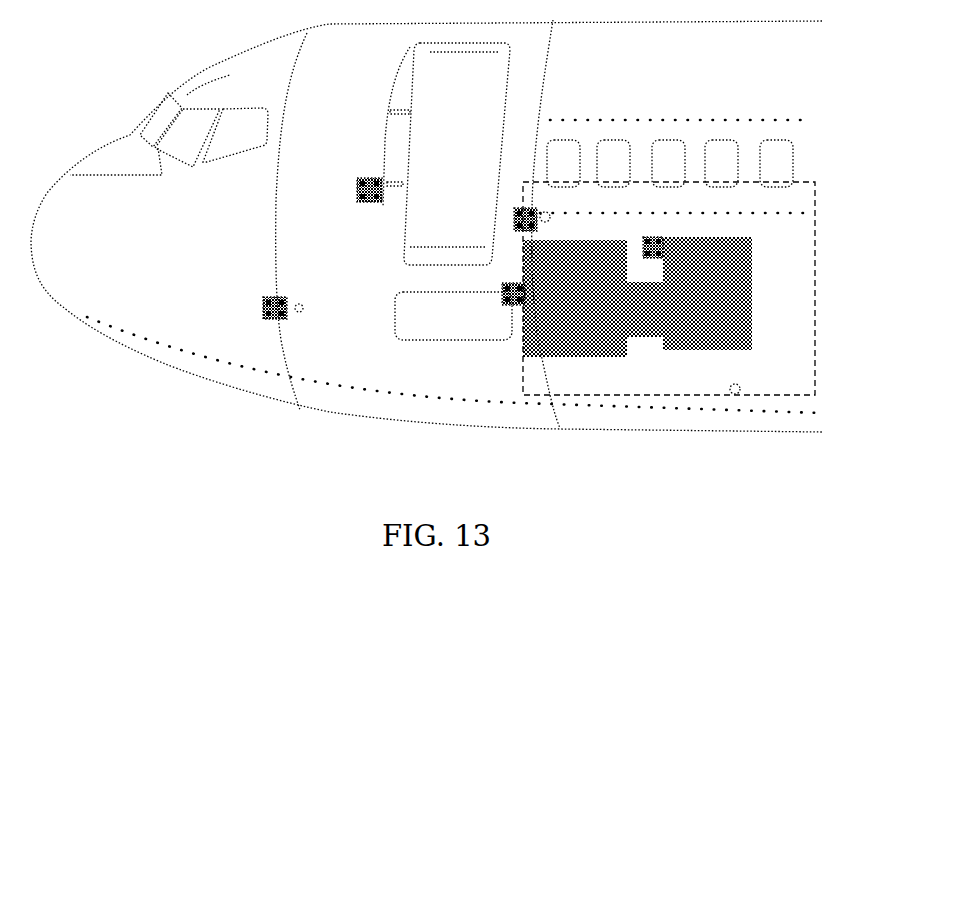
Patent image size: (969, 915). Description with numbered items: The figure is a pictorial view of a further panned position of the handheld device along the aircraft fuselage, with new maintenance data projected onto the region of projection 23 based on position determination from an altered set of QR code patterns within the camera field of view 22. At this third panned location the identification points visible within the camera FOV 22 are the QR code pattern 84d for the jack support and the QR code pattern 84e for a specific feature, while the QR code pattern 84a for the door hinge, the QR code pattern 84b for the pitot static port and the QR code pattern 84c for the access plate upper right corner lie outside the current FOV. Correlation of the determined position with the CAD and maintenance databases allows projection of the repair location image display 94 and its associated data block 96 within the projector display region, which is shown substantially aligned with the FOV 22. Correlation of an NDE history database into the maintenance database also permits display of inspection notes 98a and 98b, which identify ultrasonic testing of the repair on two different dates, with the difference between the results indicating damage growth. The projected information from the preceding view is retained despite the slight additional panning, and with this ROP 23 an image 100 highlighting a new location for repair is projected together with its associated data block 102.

The camera field of view 22 is at (699, 163).
The region of projection 23 is at (743, 182).
The QR code pattern 84a is at (363, 178).
The QR code pattern 84b is at (273, 320).
The QR code pattern 84c is at (500, 300).
The QR code pattern 84d is at (533, 212).
The QR code pattern 84e is at (660, 238).
The repair location image display 94 is at (550, 340).
The data block 96 is at (657, 335).
The inspection note 98a is at (547, 243).
The inspection note 98b is at (627, 247).
The image 100 is at (755, 310).
The data block 102 is at (753, 246).